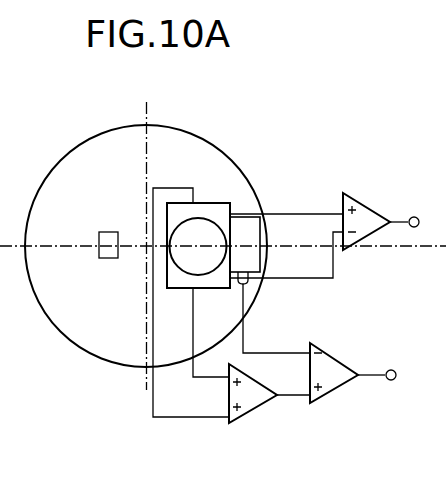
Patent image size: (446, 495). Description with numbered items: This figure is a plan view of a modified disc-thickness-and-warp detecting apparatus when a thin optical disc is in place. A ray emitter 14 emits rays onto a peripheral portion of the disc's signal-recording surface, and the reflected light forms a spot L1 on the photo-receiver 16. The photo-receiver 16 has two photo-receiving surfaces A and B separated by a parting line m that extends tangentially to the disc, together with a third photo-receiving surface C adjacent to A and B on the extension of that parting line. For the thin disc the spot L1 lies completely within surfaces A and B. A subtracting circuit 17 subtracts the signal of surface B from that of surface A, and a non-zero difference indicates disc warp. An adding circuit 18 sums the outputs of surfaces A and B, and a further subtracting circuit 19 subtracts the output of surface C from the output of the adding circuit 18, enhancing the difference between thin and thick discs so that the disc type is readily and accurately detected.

The ray emitter 14 is at (108, 258).
The spot L1 is at (197, 218).
The photo-receiver 16 is at (228, 206).
The subtracting circuit 17 is at (362, 203).
The adding circuit 18 is at (248, 417).
The subtracting circuit 19 is at (343, 363).